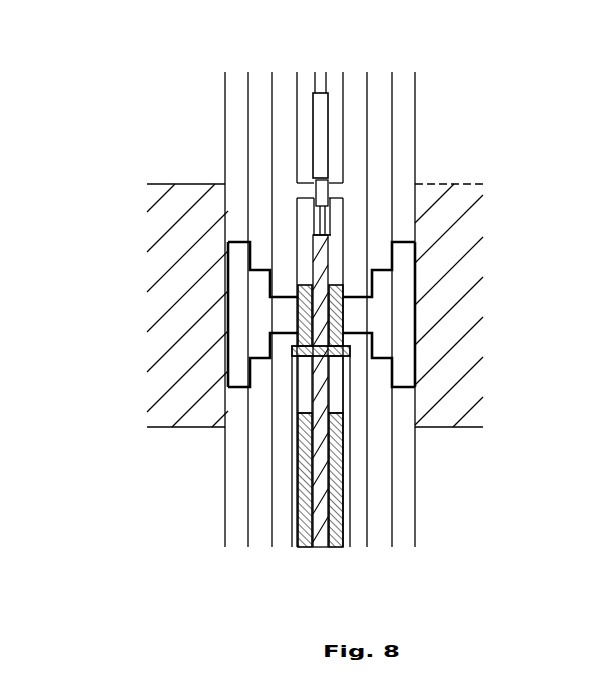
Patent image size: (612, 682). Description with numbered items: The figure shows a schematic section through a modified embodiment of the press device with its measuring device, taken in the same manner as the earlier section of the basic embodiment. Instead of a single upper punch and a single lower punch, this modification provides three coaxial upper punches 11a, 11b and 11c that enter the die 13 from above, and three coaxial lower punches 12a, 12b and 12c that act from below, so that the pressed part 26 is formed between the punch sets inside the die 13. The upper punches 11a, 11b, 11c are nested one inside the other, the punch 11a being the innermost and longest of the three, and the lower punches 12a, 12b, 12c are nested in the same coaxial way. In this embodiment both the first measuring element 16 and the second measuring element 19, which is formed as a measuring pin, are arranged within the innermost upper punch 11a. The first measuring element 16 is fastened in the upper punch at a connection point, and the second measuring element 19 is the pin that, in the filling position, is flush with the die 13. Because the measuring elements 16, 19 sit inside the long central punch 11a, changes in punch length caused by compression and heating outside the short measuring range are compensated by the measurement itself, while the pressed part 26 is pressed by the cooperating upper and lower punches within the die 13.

The upper punch 11a is at (283, 193).
The upper punch 11b is at (258, 130).
The upper punch 11c is at (238, 97).
The lower punch 12a is at (358, 425).
The lower punch 12b is at (380, 487).
The lower punch 12c is at (405, 528).
The die 13 is at (463, 193).
The first measuring element 16 is at (320, 137).
The second measuring element 19 is at (328, 340).
The pressed part 26 is at (418, 363).